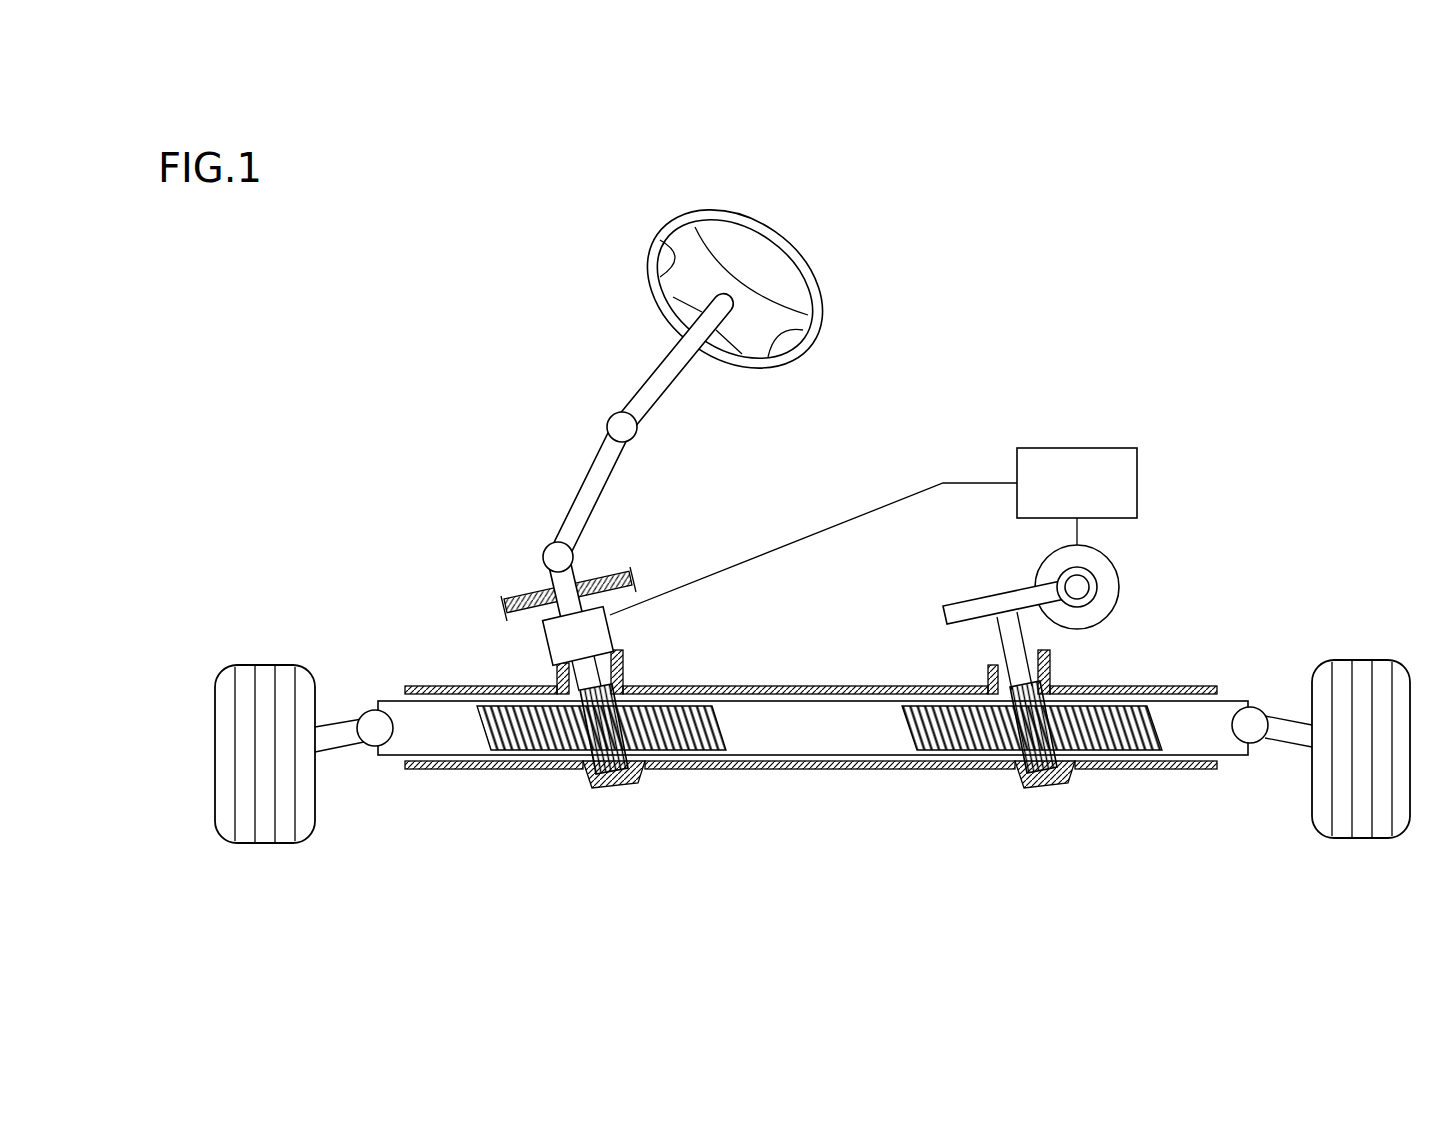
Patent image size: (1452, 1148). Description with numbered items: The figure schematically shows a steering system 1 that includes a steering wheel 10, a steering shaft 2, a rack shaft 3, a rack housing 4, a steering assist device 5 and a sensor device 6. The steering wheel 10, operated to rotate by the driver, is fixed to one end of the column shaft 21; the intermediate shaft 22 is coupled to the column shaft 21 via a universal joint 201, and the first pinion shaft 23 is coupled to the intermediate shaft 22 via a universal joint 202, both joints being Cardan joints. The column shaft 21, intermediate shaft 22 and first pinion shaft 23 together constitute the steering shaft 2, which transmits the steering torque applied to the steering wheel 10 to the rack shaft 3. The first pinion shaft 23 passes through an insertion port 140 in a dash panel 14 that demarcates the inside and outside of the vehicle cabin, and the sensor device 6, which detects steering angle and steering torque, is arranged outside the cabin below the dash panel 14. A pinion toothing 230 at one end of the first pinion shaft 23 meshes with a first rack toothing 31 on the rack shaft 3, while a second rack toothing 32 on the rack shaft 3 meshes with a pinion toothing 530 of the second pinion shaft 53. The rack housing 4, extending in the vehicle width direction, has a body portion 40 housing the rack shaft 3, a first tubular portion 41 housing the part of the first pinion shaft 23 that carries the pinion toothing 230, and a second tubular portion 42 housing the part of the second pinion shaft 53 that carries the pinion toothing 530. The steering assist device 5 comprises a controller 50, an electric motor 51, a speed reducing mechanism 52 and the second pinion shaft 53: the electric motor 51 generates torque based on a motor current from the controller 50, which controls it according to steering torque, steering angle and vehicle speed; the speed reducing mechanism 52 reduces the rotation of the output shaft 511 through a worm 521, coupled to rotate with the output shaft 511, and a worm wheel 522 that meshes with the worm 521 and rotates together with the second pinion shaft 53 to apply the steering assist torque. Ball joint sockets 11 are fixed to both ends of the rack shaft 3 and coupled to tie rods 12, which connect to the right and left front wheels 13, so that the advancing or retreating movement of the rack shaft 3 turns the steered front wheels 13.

The steering system 1 is at (554, 335).
The steering wheel 10 is at (792, 252).
The steering shaft 2 is at (612, 479).
The column shaft 21 is at (655, 430).
The intermediate shaft 22 is at (605, 492).
The first pinion shaft 23 is at (578, 567).
The universal joint 201 is at (608, 418).
The universal joint 202 is at (548, 548).
The dash panel 14 is at (522, 620).
The insertion port 140 is at (540, 579).
The sensor device 6 is at (612, 626).
The pinion toothing 230 is at (598, 778).
The rack shaft 3 is at (813, 763).
The first rack toothing 31 is at (530, 745).
The second rack toothing 32 is at (955, 745).
The rack housing 4 is at (810, 700).
The body portion 40 is at (730, 685).
The first tubular portion 41 is at (625, 667).
The second tubular portion 42 is at (986, 675).
The steering assist device 5 is at (1186, 475).
The controller 50 is at (1097, 448).
The electric motor 51 is at (1117, 568).
The output shaft 511 is at (1085, 588).
The speed reducing mechanism 52 is at (1000, 574).
The worm 521 is at (1060, 573).
The worm wheel 522 is at (1005, 600).
The second pinion shaft 53 is at (1022, 632).
The pinion toothing 530 is at (1022, 778).
The ball joint sockets 11 is at (362, 712).
The tie rods 12 is at (342, 752).
The front wheels 13 is at (262, 664).